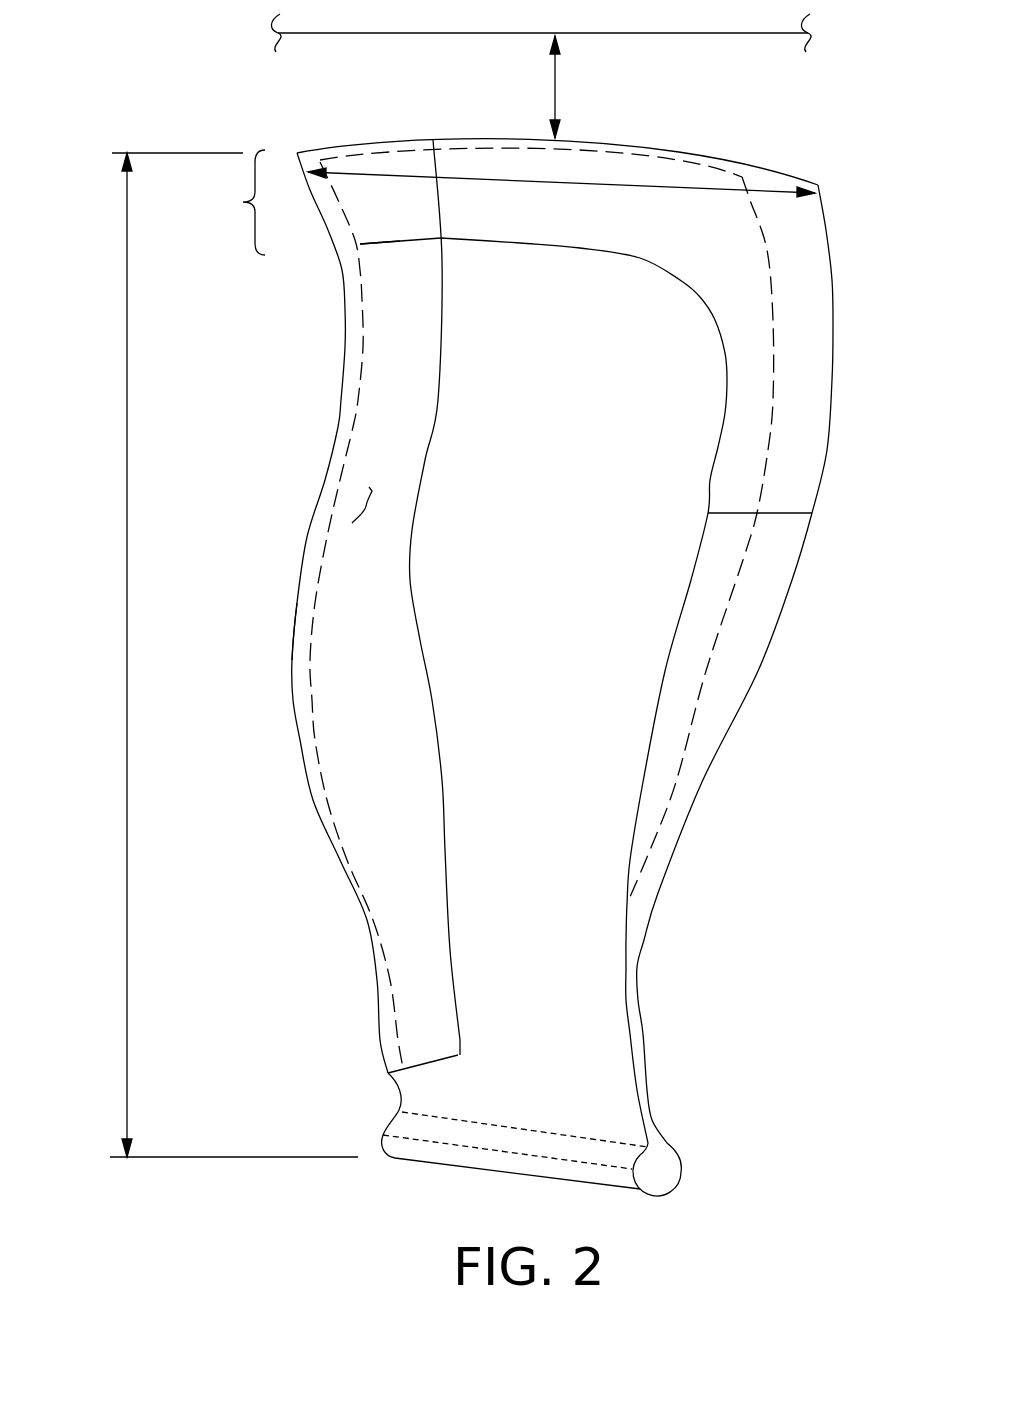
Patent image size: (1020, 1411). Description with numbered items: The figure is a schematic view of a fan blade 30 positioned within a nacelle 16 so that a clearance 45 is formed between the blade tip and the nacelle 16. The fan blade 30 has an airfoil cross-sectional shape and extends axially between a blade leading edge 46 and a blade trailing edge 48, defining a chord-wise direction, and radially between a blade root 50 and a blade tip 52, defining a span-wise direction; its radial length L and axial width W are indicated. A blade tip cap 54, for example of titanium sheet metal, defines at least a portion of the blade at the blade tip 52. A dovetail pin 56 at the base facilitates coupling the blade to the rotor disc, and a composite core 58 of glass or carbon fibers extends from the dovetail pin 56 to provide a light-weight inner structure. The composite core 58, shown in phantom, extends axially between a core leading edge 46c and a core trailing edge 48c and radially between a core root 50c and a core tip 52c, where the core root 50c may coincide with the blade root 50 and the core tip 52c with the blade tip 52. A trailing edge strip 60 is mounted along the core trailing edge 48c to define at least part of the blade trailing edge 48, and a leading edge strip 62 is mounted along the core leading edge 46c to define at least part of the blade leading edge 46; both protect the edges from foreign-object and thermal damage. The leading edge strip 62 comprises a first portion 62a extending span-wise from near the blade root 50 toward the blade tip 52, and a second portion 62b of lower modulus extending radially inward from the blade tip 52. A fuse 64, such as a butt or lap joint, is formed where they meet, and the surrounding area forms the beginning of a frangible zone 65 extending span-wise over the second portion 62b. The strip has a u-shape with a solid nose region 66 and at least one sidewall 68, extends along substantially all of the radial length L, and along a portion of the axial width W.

The nacelle 16 is at (558, 27).
The fan blade 30 is at (242, 75).
The clearance 45 is at (557, 92).
The blade leading edge 46 is at (310, 537).
The core leading edge 46c is at (307, 605).
The blade trailing edge 48 is at (762, 660).
The core trailing edge 48c is at (704, 690).
The blade root 50 is at (532, 1177).
The core root 50c is at (488, 1122).
The blade tip 52 is at (733, 165).
The core tip 52c is at (660, 150).
The blade tip cap 54 is at (695, 245).
The dovetail pin 56 is at (660, 1173).
The composite core 58 is at (572, 697).
The trailing edge strip 60 is at (782, 597).
The leading edge strip 62 is at (345, 438).
The first portion 62a is at (393, 682).
The second portion 62b is at (405, 213).
The fuse 64 is at (385, 240).
The frangible zone 65 is at (234, 202).
The solid nose region 66 is at (345, 347).
The sidewall 68 is at (350, 498).
The radial length L is at (127, 667).
The axial width W is at (565, 186).